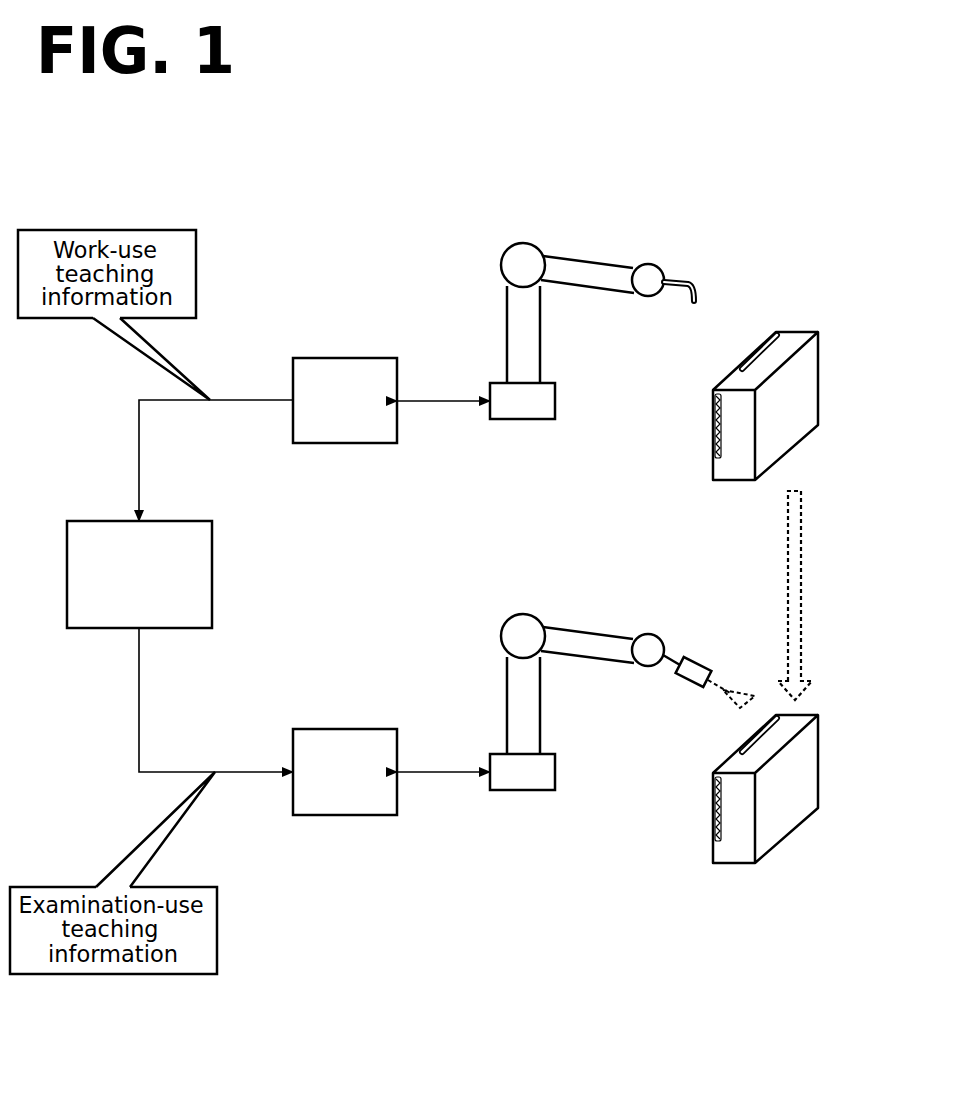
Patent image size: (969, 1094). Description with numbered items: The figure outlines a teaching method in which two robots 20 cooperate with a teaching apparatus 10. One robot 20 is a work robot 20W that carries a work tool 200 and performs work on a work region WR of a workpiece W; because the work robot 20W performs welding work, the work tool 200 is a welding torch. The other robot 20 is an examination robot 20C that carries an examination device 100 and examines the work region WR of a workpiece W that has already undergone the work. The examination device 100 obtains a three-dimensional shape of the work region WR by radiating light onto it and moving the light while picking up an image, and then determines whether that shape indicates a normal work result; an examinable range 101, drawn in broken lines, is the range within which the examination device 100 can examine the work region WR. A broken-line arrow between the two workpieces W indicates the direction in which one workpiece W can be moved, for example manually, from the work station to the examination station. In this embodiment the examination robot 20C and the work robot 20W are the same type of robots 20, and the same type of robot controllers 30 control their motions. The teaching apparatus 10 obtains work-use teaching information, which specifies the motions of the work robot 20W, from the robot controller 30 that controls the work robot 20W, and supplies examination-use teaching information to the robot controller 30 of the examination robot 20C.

The teaching apparatus 10 is at (212, 578).
The robot 20 is at (586, 492).
The work robot 20W is at (573, 306).
The examination robot 20C is at (610, 666).
The robot controller 30 is at (348, 358).
The examination device 100 is at (701, 663).
The examinable range 101 is at (736, 690).
The work tool 200 is at (692, 284).
The workpiece W is at (750, 577).
The work region WR is at (714, 423).